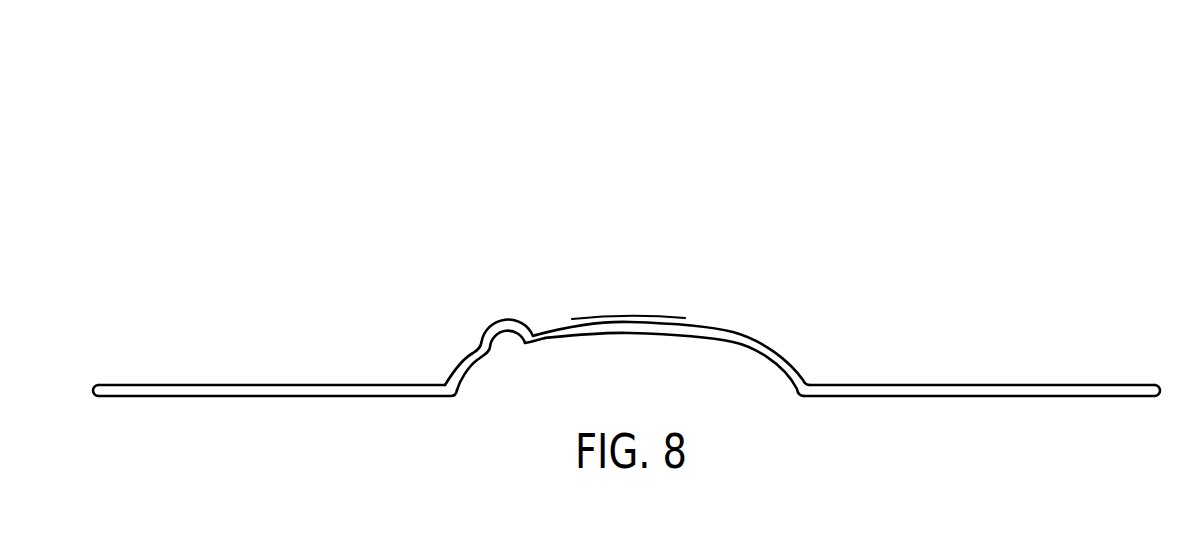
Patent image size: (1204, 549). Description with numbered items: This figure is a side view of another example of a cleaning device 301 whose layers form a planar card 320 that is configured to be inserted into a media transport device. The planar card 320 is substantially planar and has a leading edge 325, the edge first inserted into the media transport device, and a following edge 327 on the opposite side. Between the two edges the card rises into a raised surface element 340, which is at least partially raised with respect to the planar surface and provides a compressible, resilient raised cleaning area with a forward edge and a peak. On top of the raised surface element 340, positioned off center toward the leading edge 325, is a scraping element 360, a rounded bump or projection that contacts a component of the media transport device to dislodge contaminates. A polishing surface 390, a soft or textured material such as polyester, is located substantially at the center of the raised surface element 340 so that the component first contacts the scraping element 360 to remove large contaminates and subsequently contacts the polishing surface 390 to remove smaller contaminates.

The cleaning device 301 is at (876, 126).
The planar card 320 is at (918, 388).
The leading edge 325 is at (97, 383).
The following edge 327 is at (1148, 388).
The raised surface element 340 is at (733, 332).
The scraping element 360 is at (507, 321).
The polishing surface 390 is at (623, 312).